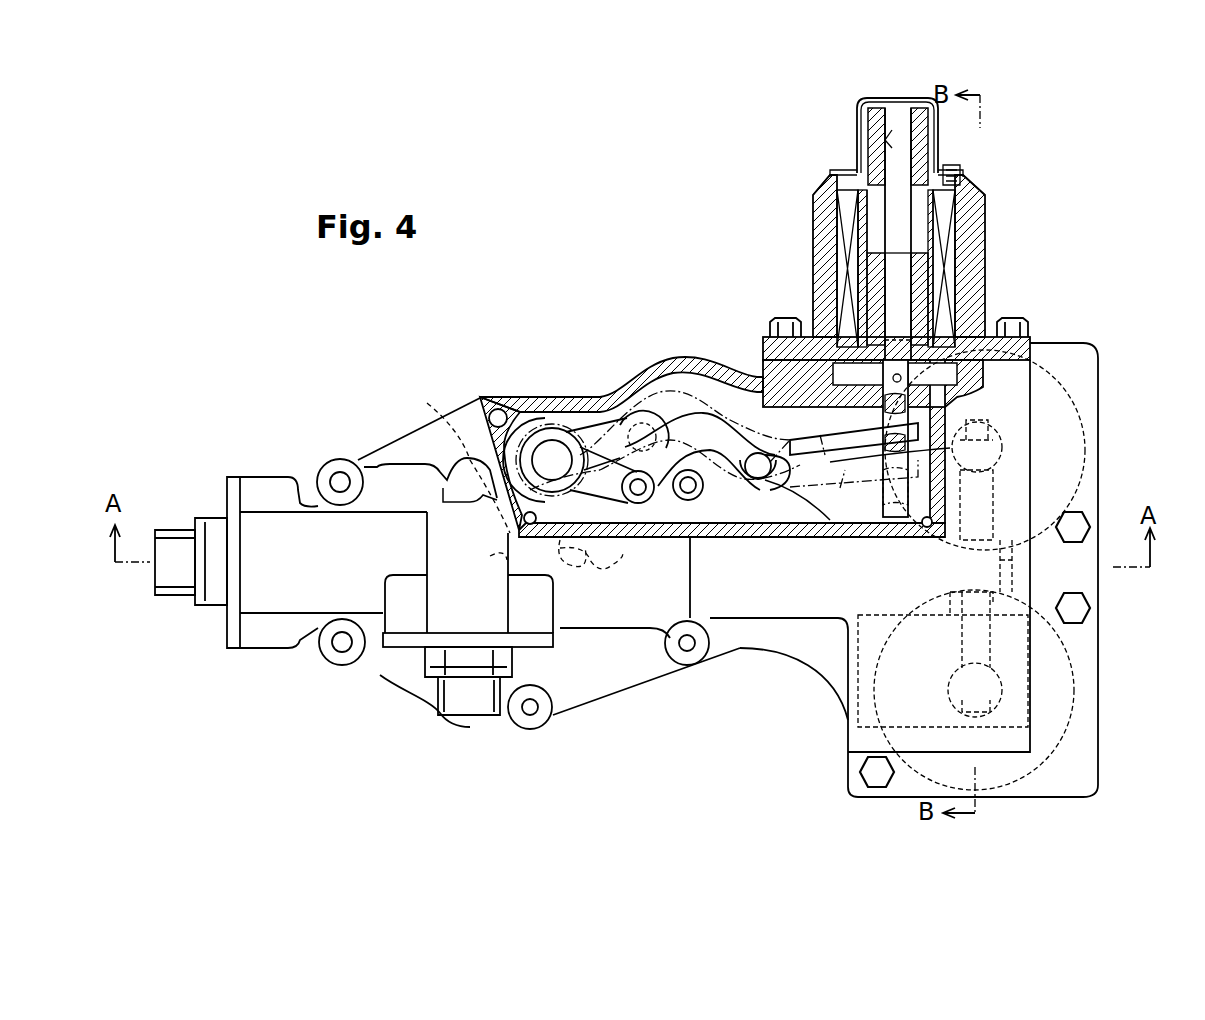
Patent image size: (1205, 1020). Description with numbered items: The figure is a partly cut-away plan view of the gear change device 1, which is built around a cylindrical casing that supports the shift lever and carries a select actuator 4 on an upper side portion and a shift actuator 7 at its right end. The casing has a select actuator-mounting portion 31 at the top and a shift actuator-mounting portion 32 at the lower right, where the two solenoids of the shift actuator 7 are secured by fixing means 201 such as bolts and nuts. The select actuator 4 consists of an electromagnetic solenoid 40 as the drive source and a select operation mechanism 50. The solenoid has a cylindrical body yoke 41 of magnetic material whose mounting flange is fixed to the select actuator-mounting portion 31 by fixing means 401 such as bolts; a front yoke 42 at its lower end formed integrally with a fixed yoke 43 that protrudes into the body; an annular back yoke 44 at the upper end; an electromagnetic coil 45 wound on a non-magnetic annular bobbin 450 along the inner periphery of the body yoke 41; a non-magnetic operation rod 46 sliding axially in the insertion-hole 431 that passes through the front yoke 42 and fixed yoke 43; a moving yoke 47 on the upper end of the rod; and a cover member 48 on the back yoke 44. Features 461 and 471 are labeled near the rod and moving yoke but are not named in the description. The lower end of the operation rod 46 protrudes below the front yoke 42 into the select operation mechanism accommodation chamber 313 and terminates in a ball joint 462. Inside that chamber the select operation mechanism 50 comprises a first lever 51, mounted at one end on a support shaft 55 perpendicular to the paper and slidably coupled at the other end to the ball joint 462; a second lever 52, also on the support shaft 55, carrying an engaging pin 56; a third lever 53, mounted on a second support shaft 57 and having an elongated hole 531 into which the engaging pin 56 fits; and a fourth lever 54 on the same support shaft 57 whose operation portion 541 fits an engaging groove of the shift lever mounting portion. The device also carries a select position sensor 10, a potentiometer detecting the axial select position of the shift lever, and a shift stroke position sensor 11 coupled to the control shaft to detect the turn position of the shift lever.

The gear change device 1 is at (652, 227).
The select actuator 4 is at (784, 233).
The shift actuator 7 is at (1132, 692).
The select position sensor 10 is at (456, 731).
The shift stroke position sensor 11 is at (211, 505).
The select actuator-mounting portion 31 is at (795, 318).
The shift actuator-mounting portion 32 is at (1085, 770).
The electromagnetic solenoid 40 is at (1004, 222).
The body yoke 41 is at (972, 253).
The front yoke 42 is at (1005, 352).
The fixed yoke 43 is at (928, 298).
The back yoke 44 is at (840, 172).
The electromagnetic coil 45 is at (956, 232).
The operation rod 46 is at (900, 204).
The moving yoke 47 is at (925, 147).
The cover member 48 is at (880, 105).
The select operation mechanism 50 is at (712, 388).
The first lever 51 is at (814, 537).
The second lever 52 is at (683, 412).
The third lever 53 is at (552, 447).
The fourth lever 54 is at (470, 460).
The support shaft 55 is at (756, 455).
The engaging pin 56 is at (684, 470).
The support shaft 57 is at (533, 440).
The fixing means 201 is at (1088, 518).
The select operation mechanism accommodation chamber 313 is at (640, 412).
The fixing means 401 is at (1016, 318).
The insertion-hole 431 is at (905, 278).
The annular bobbin 450 is at (836, 226).
The plunger end 461 is at (900, 133).
The ball joint 462 is at (950, 448).
The cap sleeve 471 is at (892, 135).
The elongated hole 531 is at (606, 455).
The operation portion 541 is at (620, 552).